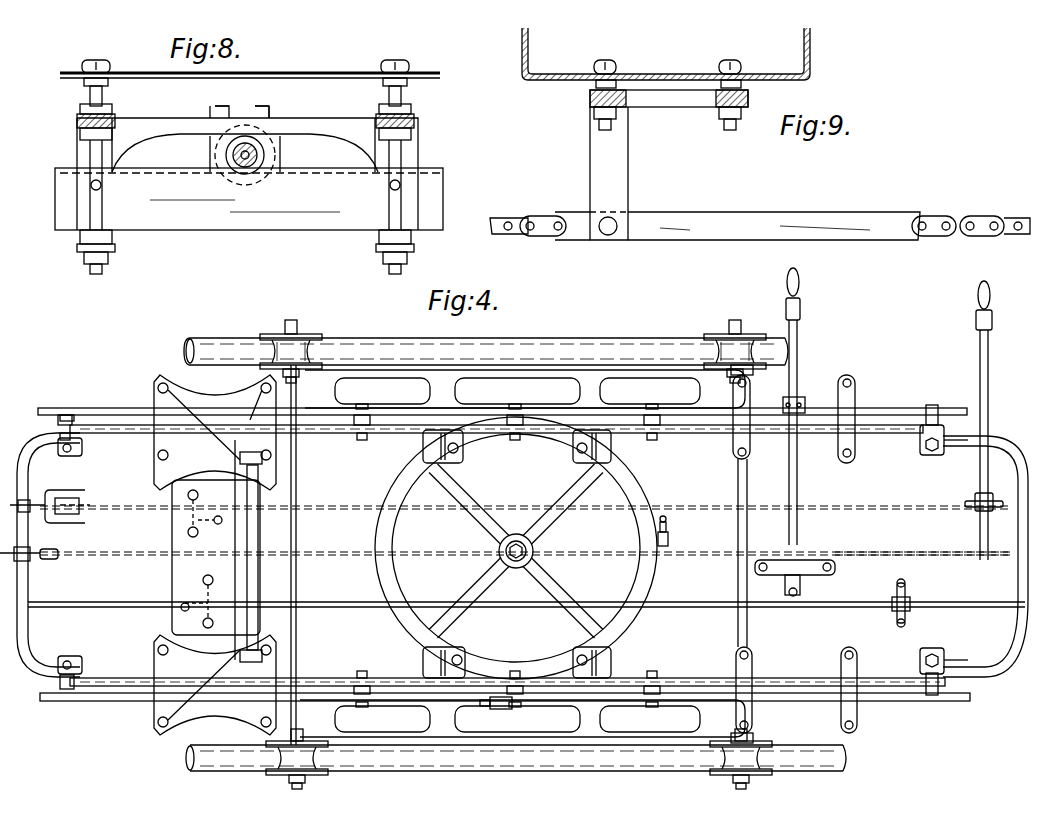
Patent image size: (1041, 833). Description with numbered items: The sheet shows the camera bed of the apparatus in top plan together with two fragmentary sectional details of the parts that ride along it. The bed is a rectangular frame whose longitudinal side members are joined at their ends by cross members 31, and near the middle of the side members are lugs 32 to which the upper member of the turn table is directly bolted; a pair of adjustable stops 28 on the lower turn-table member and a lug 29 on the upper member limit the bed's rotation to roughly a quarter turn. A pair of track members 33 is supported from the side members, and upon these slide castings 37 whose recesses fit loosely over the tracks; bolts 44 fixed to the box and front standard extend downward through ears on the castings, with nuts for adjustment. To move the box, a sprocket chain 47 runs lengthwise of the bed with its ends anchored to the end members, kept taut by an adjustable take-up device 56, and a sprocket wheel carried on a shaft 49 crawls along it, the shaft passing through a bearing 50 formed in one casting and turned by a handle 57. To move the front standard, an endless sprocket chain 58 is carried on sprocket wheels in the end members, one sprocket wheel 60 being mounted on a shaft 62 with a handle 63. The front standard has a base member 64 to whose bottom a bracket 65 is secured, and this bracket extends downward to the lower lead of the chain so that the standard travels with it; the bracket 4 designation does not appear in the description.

In FIG. 4, the pivot pin 4 is at (798, 596).
In FIG. 4, the adjustable stops 28 is at (669, 536).
In FIG. 4, the lug 29 is at (662, 556).
In FIG. 4, the cross members 31 is at (30, 586).
In FIG. 4, the lugs 32 is at (423, 446).
In FIG. 4, the track members 33 is at (114, 408).
In FIG. 8, the castings 37 is at (290, 128).
In FIG. 4, the castings 37 is at (812, 408).
In FIG. 4, the bolts 44 is at (162, 388).
In FIG. 4, the sprocket chain 47 is at (868, 556).
In FIG. 8, the shaft 49 is at (243, 168).
In FIG. 4, the shaft 49 is at (798, 355).
In FIG. 8, the bearing 50 is at (265, 155).
In FIG. 4, the bearing 50 is at (808, 576).
In FIG. 4, the adjustable take-up device 56 is at (42, 562).
In FIG. 4, the handle 57 is at (800, 283).
In FIG. 9, the endless sprocket chain 58 is at (545, 226).
In FIG. 4, the endless sprocket chain 58 is at (320, 508).
In FIG. 4, the sprocket wheel 60 is at (968, 500).
In FIG. 4, the shaft 62 is at (989, 385).
In FIG. 4, the handle 63 is at (992, 300).
In FIG. 9, the base member 64 is at (790, 56).
In FIG. 9, the bracket 65 is at (615, 170).